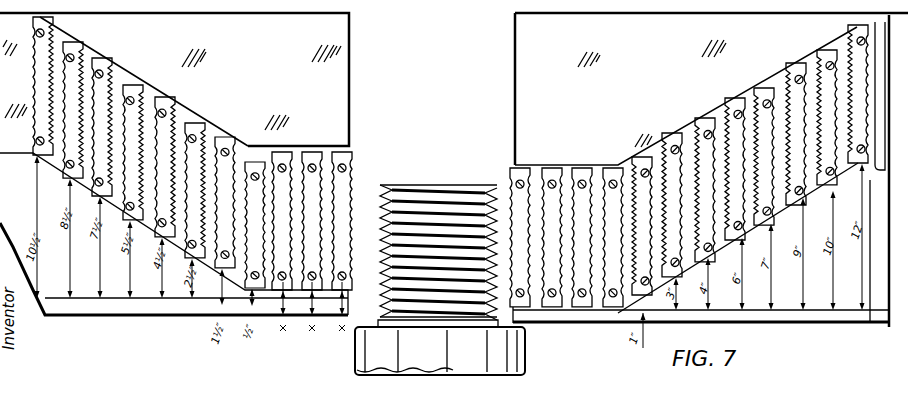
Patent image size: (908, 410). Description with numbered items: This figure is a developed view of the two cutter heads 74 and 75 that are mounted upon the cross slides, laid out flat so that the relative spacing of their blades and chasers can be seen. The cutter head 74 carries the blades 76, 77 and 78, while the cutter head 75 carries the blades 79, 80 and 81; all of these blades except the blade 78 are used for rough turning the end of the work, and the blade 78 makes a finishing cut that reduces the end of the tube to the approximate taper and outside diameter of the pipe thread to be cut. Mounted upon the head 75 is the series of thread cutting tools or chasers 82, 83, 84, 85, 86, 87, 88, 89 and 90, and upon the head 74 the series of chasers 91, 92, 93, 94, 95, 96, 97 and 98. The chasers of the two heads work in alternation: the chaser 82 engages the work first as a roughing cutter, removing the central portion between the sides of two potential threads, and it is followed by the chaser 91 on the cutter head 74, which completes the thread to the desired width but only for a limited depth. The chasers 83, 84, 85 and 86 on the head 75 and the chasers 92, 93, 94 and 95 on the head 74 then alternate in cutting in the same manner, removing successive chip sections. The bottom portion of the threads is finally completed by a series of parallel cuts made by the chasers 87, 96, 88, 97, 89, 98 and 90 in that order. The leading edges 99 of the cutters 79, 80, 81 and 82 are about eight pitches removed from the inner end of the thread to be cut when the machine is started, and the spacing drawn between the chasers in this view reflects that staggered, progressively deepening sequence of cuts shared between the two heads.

The cutter head 74 is at (350, 62).
The cutter head 75 is at (515, 80).
The blade 76 is at (350, 152).
The blade 77 is at (320, 152).
The blade 78 is at (290, 152).
The blade 79 is at (520, 170).
The blade 80 is at (552, 170).
The blade 81 is at (582, 170).
The chaser 82 is at (613, 170).
The chaser 83 is at (645, 157).
The chaser 84 is at (680, 120).
The chaser 85 is at (715, 105).
The chaser 86 is at (745, 88).
The chaser 87 is at (768, 88).
The chaser 88 is at (805, 50).
The chaser 89 is at (830, 50).
The chaser 90 is at (865, 13).
The chaser 91 is at (255, 162).
The chaser 92 is at (233, 137).
The chaser 93 is at (205, 123).
The chaser 94 is at (175, 97).
The chaser 95 is at (143, 85).
The chaser 96 is at (122, 44).
The chaser 97 is at (83, 42).
The chaser 98 is at (33, 25).
The leading edges 99 is at (560, 312).